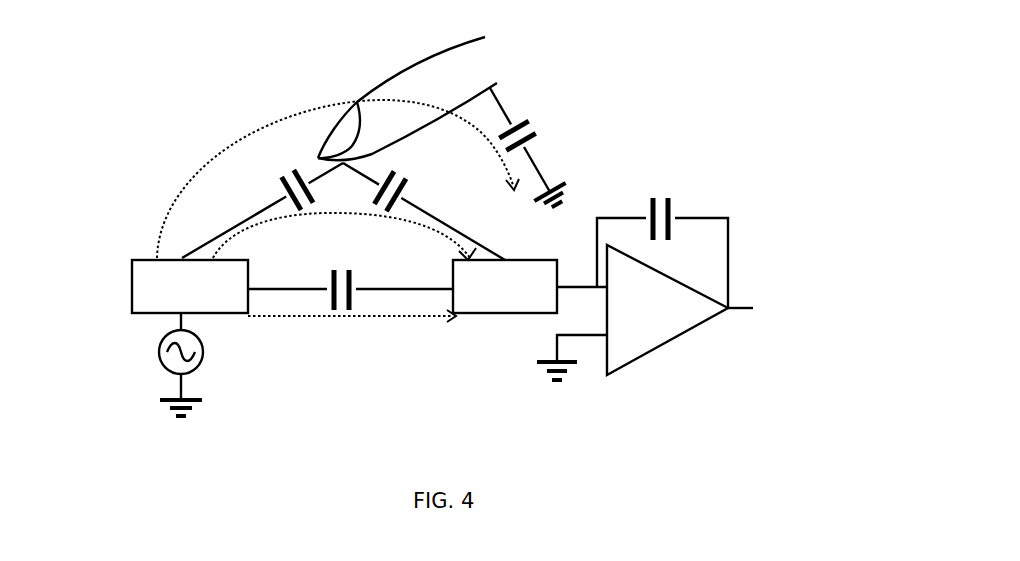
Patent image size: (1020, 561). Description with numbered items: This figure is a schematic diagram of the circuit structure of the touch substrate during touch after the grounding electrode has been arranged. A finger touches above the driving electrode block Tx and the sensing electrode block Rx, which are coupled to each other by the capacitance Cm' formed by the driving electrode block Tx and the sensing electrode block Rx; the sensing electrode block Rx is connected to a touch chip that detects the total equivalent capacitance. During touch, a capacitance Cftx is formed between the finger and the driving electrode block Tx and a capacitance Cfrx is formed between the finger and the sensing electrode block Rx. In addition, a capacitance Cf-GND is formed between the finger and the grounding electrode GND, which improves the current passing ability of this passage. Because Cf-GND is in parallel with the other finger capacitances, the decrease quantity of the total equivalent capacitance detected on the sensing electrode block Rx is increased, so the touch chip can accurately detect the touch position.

The driving electrode block Tx is at (190, 286).
The sensing electrode block Rx is at (505, 286).
The capacitance formed between the finger and the driving electrode block Cftx is at (262, 209).
The capacitance formed between the finger and the sensing electrode block Cfrx is at (424, 210).
The capacitance formed between the finger and the grounding electrode Cf-GND is at (569, 140).
The grounding electrode GND is at (586, 189).
The capacitance formed by the driving electrode block and the sensing electrode bloc Cm' is at (344, 295).